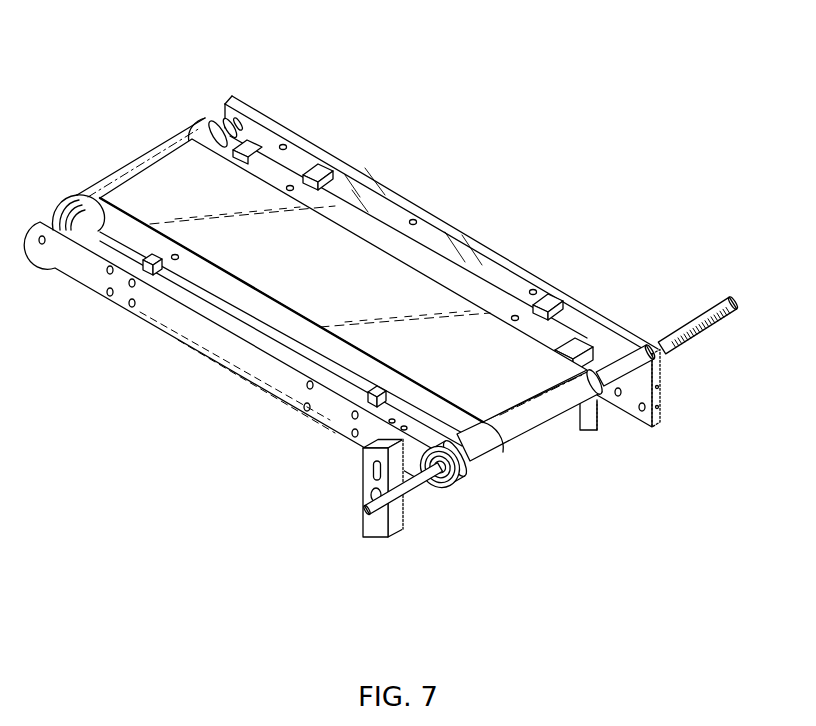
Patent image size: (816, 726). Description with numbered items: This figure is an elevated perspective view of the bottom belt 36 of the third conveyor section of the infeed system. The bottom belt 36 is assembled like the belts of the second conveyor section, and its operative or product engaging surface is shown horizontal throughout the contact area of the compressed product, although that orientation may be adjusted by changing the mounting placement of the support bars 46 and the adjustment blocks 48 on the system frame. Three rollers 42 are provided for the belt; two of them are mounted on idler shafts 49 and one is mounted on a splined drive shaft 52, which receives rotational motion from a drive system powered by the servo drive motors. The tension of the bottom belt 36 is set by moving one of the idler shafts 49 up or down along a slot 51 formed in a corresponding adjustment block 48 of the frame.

The bottom belt 36 is at (323, 279).
The roller 42 is at (218, 130).
The support bar 46 is at (388, 213).
The adjustment block 48 is at (383, 523).
The idler shaft 49 is at (237, 130).
The slot 51 is at (373, 470).
The splined drive shaft 52 is at (703, 310).